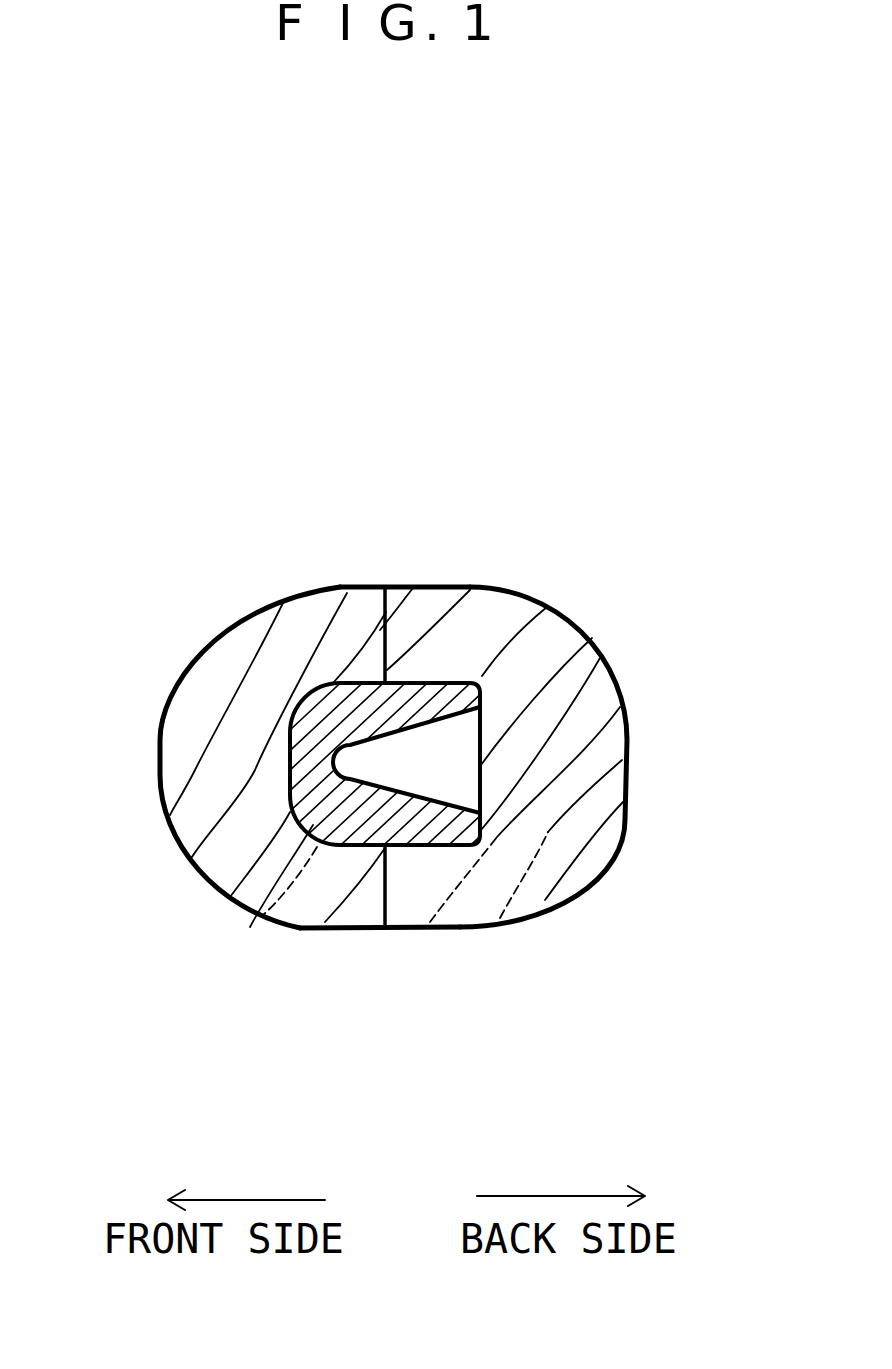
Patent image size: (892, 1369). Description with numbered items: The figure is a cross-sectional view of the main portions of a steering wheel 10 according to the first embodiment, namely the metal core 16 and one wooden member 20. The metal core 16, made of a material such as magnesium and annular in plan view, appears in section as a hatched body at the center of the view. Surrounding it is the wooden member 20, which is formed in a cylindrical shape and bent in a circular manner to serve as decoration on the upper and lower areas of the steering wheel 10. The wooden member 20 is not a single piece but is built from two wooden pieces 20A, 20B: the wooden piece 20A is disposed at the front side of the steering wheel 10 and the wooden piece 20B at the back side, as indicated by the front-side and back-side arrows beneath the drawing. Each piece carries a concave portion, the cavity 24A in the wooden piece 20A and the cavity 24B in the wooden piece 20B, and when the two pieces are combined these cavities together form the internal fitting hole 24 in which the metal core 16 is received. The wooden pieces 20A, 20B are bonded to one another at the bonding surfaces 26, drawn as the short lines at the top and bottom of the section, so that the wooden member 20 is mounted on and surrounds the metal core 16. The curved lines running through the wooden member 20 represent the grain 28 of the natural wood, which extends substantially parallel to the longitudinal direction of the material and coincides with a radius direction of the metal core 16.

The steering wheel 10 is at (383, 322).
The metal core 16 is at (305, 825).
The wooden member 20 is at (257, 612).
The wooden piece 20A is at (160, 735).
The wooden piece 20B is at (626, 740).
The fitting hole 24 is at (410, 777).
The cavity (concave portion) 24A is at (290, 763).
The cavity (concave portion) 24B is at (480, 750).
The bonding surfaces 26 is at (385, 632).
The grain 28 is at (530, 638).